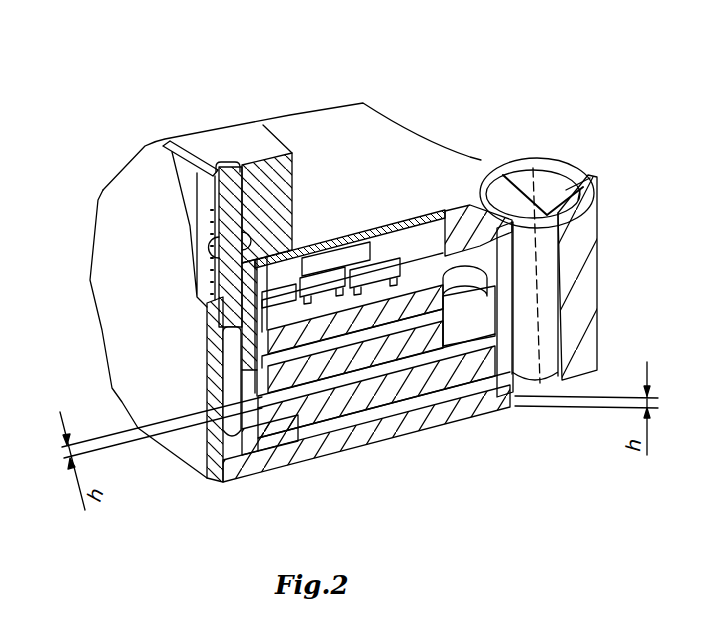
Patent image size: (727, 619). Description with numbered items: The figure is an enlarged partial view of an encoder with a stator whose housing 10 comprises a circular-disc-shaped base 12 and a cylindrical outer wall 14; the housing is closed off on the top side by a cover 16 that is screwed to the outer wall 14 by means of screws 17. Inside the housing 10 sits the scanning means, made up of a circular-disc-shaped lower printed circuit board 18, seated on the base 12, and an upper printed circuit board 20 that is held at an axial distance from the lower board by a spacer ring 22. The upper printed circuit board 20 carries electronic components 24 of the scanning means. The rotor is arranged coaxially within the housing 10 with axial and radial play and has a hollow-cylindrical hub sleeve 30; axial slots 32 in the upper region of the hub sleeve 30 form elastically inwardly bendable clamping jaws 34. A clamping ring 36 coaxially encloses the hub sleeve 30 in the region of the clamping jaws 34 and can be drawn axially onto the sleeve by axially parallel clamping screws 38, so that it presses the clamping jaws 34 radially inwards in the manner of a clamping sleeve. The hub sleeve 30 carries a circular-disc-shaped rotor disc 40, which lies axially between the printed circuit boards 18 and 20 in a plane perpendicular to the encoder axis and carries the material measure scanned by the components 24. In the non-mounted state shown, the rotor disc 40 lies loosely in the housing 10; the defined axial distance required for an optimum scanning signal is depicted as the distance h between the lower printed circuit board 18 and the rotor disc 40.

The housing 10 is at (470, 119).
The base 12 is at (312, 447).
The outer wall 14 is at (514, 278).
The cover 16 is at (372, 147).
The screws 17 is at (556, 320).
The lower printed circuit board 18 is at (342, 407).
The upper printed circuit board 20 is at (433, 313).
The spacer ring 22 is at (477, 323).
The electronic components 24 is at (363, 240).
The hub sleeve 30 is at (205, 378).
The axial slots 32 is at (203, 242).
The clamping jaws 34 is at (175, 137).
The clamping ring 36 is at (262, 173).
The clamping screws 38 is at (227, 162).
The rotor disc 40 is at (387, 358).